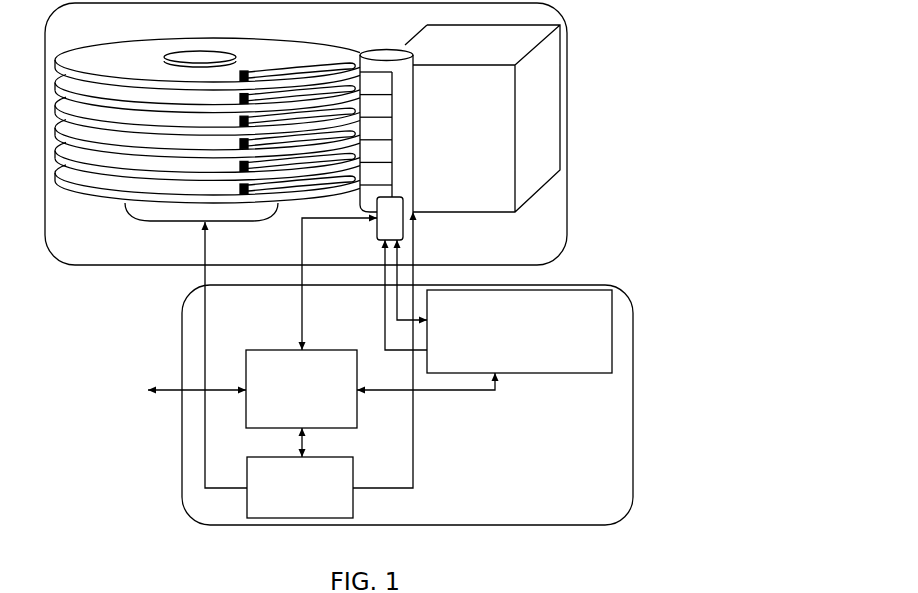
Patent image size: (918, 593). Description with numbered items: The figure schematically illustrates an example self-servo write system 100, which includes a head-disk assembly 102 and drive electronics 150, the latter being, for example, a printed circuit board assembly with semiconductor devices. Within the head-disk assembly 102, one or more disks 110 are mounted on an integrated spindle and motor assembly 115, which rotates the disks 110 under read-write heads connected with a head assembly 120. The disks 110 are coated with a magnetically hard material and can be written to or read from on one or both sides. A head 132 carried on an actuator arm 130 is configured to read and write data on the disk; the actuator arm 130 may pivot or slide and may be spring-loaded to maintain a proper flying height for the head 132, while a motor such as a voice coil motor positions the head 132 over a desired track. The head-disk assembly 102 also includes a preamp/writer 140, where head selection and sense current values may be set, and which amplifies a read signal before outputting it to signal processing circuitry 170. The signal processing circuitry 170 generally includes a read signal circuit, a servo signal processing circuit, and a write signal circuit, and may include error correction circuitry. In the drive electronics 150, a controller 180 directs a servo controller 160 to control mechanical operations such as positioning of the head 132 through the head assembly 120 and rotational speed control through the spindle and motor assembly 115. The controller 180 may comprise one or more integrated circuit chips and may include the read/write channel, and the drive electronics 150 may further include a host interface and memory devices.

The self-servo write system 100 is at (426, 264).
The head-disk assembly 102 is at (508, 249).
The disks 110 is at (123, 34).
The spindle and motor assembly 115 is at (168, 224).
The head assembly 120 is at (397, 31).
The actuator arm 130 is at (306, 70).
The head 132 is at (244, 72).
The preamp/writer 140 is at (376, 229).
The drive electronics 150 is at (513, 506).
The servo controller 160 is at (347, 458).
The signal processing circuitry 170 is at (561, 374).
The controller 180 is at (313, 351).